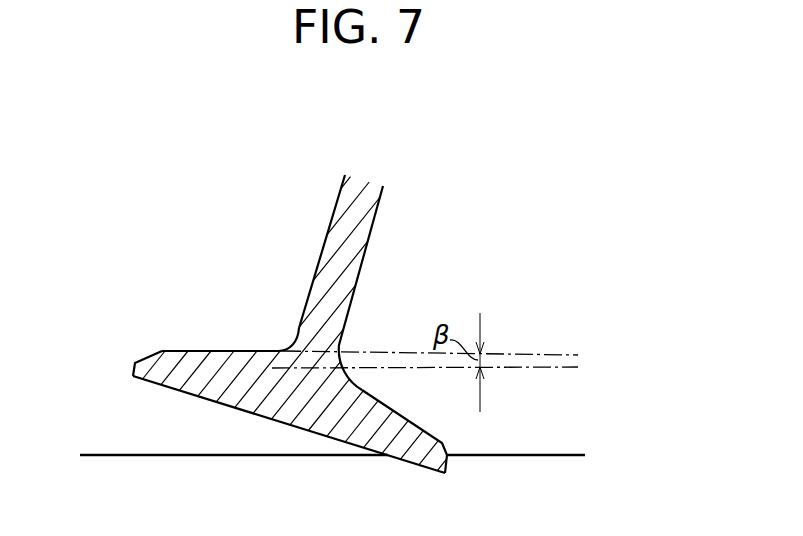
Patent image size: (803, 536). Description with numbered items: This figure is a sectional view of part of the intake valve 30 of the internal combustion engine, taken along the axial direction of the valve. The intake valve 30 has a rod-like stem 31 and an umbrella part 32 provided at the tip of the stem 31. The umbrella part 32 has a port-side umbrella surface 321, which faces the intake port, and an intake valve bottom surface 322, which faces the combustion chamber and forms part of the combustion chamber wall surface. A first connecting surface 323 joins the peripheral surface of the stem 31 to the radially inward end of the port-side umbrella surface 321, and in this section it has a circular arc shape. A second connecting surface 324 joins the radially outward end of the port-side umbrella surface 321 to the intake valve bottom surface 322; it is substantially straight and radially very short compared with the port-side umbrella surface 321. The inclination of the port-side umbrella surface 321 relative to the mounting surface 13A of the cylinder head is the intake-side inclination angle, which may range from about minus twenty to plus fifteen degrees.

The intake valve 30 is at (271, 343).
The stem 31 is at (372, 230).
The umbrella part 32 is at (271, 398).
The port-side umbrella surface 321 is at (223, 351).
The intake valve bottom surface 322 is at (287, 426).
The first connecting surface 323 is at (283, 348).
The second connecting surface 324 is at (148, 353).
The mounting surface 13A is at (543, 457).